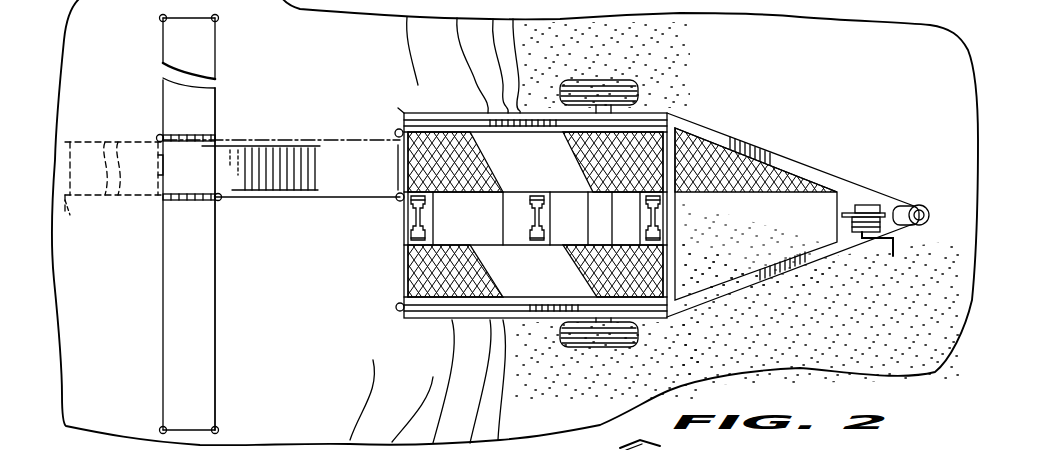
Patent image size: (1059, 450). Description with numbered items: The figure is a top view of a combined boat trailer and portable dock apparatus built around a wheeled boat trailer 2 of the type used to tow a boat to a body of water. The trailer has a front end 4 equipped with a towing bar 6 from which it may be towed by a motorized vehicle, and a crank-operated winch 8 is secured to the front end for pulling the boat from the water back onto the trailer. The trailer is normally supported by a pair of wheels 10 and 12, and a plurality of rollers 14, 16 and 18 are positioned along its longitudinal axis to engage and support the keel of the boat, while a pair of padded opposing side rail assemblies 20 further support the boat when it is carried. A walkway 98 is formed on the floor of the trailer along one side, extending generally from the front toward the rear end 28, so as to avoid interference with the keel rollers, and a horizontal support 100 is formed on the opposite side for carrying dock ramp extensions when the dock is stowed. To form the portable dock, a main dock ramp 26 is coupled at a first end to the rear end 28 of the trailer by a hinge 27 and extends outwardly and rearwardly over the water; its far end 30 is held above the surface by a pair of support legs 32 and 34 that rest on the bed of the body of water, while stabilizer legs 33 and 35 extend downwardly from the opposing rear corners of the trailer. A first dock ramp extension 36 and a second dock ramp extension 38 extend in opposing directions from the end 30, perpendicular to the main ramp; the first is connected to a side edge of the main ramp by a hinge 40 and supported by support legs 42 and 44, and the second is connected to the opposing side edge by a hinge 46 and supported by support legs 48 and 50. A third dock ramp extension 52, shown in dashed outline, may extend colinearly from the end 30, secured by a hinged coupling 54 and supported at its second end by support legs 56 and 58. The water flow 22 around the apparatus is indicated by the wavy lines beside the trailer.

The wheeled boat trailer 2 is at (671, 217).
The front end 4 is at (852, 178).
The towing bar 6 is at (926, 224).
The crank-operated winch 8 is at (872, 205).
The wheel 10 is at (618, 347).
The wheel 12 is at (610, 80).
The roller 14 is at (425, 216).
The roller 16 is at (530, 215).
The roller 18 is at (660, 218).
The padded opposing side rail assembly 20 is at (465, 100).
The water current 22 is at (470, 335).
The main dock ramp 26 is at (290, 128).
The hinge 27 is at (395, 133).
The rear end 28 is at (397, 202).
The end of main dock ramp 30 is at (196, 200).
The support leg 32 is at (160, 162).
The stabilizer leg 33 is at (397, 309).
The support leg 34 is at (220, 200).
The stabilizer leg 35 is at (400, 111).
The first dock ramp extension 36 is at (216, 348).
The second dock ramp extension 38 is at (212, 98).
The hinge 40 is at (166, 203).
The support leg 42 is at (160, 428).
The support leg 44 is at (219, 428).
The hinge 46 is at (210, 134).
The support leg 48 is at (158, 18).
The support leg 50 is at (218, 18).
The third dock ramp extension 52 is at (112, 200).
The hinged coupling 54 is at (140, 165).
The support leg 56 is at (68, 140).
The support leg 58 is at (70, 205).
The walkway 98 is at (535, 162).
The horizontal support 100 is at (535, 271).